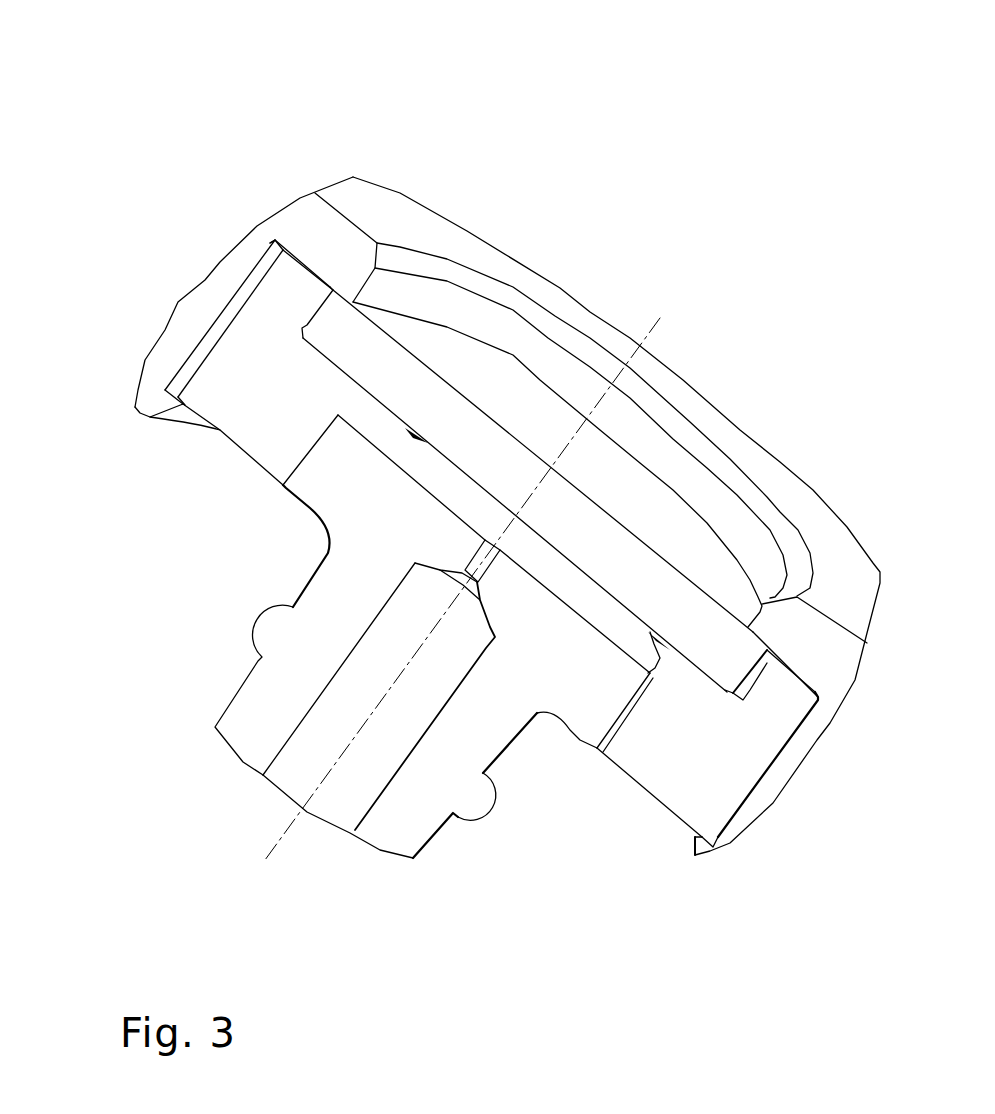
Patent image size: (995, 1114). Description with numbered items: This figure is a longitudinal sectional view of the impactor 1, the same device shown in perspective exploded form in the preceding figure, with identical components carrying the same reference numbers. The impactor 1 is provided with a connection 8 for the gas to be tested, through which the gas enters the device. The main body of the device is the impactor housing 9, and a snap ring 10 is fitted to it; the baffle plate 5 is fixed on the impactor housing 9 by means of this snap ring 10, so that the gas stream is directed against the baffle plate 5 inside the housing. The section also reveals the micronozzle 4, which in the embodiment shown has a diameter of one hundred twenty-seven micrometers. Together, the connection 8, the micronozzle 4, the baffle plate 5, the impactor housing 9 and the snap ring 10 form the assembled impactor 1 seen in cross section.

The impactor 1 is at (507, 431).
The micronozzle 4 is at (494, 647).
The baffle plate 5 is at (528, 433).
The connection 8 is at (330, 690).
The impactor housing 9 is at (230, 286).
The snap ring 10 is at (610, 549).